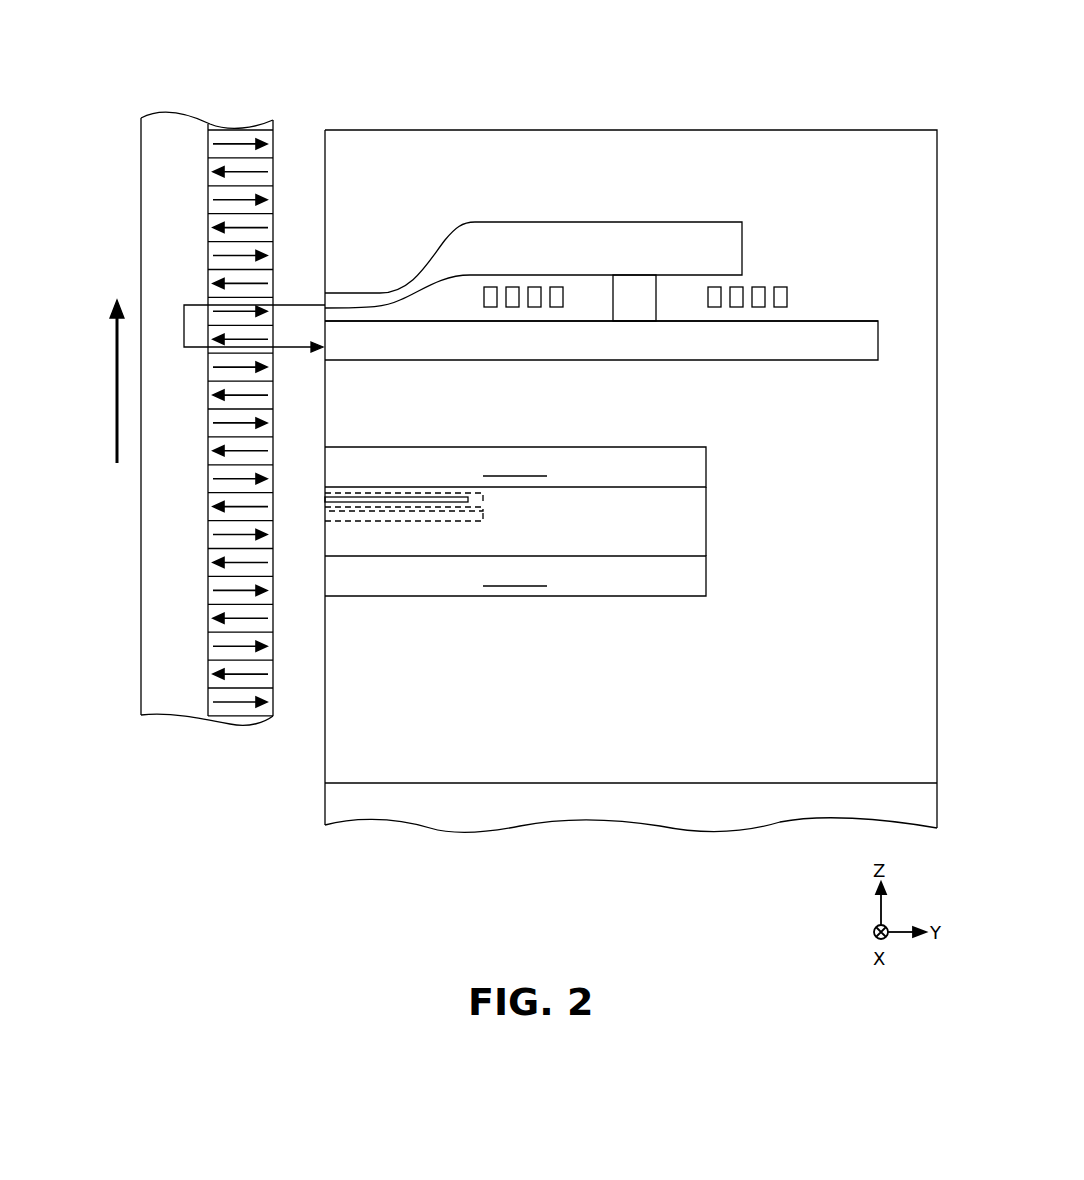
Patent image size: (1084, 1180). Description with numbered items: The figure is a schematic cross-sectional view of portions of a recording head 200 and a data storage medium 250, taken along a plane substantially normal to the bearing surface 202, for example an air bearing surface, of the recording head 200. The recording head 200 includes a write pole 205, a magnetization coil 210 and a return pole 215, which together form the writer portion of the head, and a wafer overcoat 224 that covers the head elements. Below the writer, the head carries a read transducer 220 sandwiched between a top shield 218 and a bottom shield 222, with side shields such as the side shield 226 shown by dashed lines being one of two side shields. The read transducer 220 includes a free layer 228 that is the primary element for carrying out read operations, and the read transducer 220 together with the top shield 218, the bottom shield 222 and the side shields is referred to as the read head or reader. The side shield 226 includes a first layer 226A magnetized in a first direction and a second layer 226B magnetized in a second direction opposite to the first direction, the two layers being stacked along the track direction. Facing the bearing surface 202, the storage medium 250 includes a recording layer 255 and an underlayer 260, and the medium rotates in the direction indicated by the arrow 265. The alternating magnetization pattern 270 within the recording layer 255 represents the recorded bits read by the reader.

The recording head 200 is at (763, 80).
The bearing surface 202 is at (323, 757).
The write pole 205 is at (377, 293).
The magnetization coil 210 is at (534, 287).
The return pole 215 is at (537, 340).
The top shield 218 is at (610, 467).
The read transducer 220 is at (675, 507).
The bottom shield 222 is at (632, 577).
The wafer overcoat 224 is at (863, 414).
The side shield 226 is at (505, 516).
The first layer 226A is at (372, 490).
The second layer 226B is at (412, 525).
The free layer 228 is at (430, 497).
The data storage medium 250 is at (187, 728).
The recording layer 255 is at (233, 127).
The underlayer 260 is at (160, 690).
The arrow 265 is at (115, 385).
The magnetization bits 270 is at (250, 142).